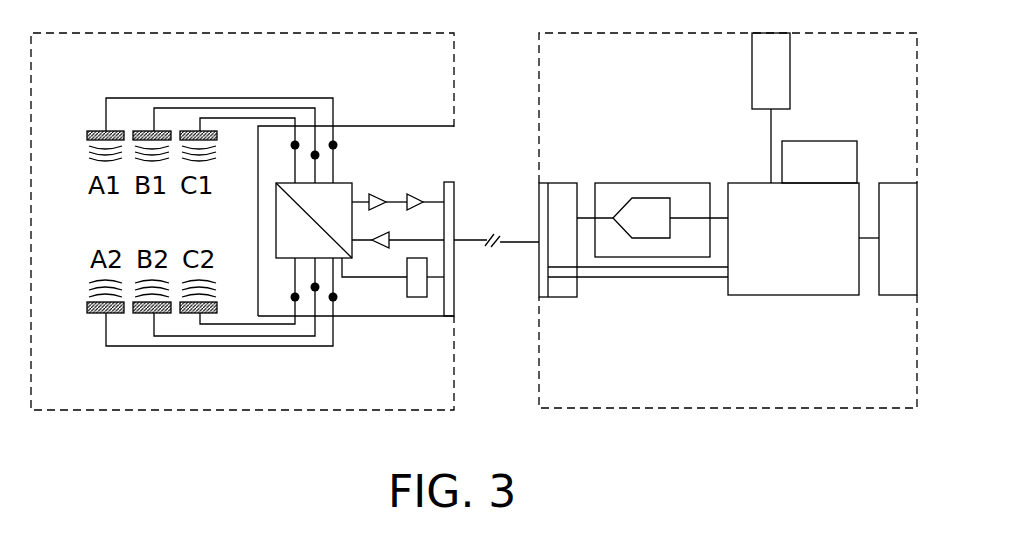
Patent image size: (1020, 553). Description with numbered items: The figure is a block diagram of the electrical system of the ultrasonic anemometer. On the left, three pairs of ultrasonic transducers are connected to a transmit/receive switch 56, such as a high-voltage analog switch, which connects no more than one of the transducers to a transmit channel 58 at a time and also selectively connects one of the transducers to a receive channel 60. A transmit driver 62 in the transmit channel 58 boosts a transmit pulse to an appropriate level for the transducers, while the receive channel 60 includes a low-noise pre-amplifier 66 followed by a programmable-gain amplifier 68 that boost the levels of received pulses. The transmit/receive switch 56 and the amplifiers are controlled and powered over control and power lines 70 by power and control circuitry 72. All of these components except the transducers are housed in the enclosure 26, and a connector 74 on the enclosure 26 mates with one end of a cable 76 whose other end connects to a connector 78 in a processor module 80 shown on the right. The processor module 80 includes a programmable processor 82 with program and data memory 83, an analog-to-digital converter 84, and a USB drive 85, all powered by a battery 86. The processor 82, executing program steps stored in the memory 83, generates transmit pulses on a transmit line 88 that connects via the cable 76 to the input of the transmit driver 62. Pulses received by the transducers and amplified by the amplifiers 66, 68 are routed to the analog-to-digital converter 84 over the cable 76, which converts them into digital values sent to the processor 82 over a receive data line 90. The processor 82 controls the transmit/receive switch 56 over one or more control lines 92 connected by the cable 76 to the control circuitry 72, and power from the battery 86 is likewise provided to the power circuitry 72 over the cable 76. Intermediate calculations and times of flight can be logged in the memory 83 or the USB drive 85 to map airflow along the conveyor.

The enclosure 26 is at (183, 411).
The transmit/receive switch 56 is at (338, 190).
The transmit channel 58 is at (365, 243).
The receive channel 60 is at (360, 198).
The transmit driver 62 is at (387, 246).
The low-noise pre-amplifier 66 is at (380, 192).
The programmable-gain amplifier 68 is at (425, 201).
The control and power lines 70 is at (352, 262).
The power and control circuitry 72 is at (422, 288).
The connector 74 is at (455, 278).
The cable 76 is at (508, 243).
The connector 78 is at (540, 202).
The processor module 80 is at (662, 403).
The programmable processor 82 is at (802, 246).
The program and data memory 83 is at (812, 147).
The analog-to-digital converter 84 is at (637, 205).
The USB drive 85 is at (790, 75).
The battery 86 is at (897, 295).
The transmit line 88 is at (608, 268).
The receive data line 90 is at (718, 215).
The control lines 92 is at (673, 278).